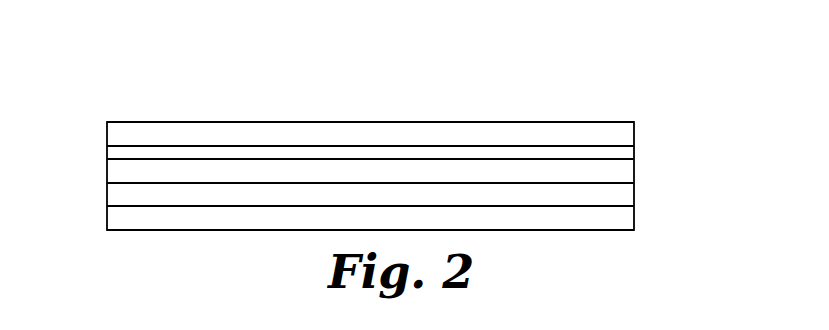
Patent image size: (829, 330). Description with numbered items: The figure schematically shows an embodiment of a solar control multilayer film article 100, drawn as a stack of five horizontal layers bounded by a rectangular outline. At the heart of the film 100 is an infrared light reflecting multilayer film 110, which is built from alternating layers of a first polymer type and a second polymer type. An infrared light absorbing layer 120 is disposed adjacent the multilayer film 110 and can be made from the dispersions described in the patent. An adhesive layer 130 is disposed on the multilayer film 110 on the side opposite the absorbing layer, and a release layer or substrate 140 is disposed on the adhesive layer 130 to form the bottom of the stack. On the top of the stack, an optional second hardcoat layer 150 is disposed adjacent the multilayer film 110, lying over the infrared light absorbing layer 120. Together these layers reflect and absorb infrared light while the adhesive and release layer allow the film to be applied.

The solar control multilayer film article 100 is at (565, 99).
The infrared light reflecting multilayer film 110 is at (623, 174).
The infrared light absorbing layer 120 is at (115, 154).
The adhesive layer 130 is at (115, 194).
The release layer or substrate 140 is at (622, 218).
The second hardcoat layer 150 is at (623, 135).